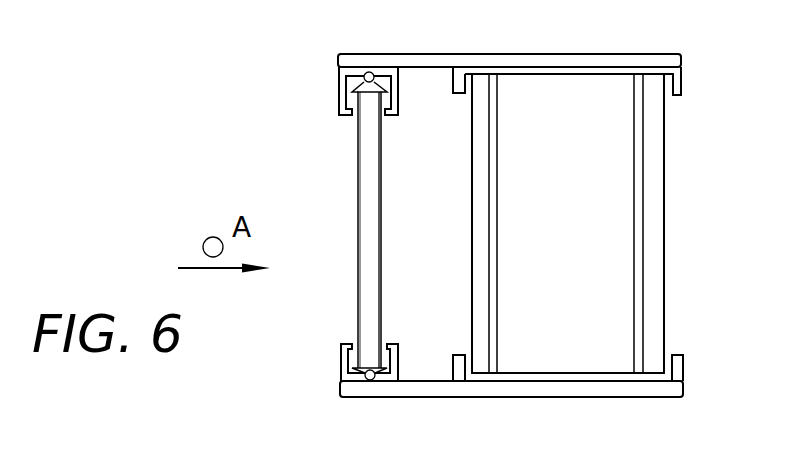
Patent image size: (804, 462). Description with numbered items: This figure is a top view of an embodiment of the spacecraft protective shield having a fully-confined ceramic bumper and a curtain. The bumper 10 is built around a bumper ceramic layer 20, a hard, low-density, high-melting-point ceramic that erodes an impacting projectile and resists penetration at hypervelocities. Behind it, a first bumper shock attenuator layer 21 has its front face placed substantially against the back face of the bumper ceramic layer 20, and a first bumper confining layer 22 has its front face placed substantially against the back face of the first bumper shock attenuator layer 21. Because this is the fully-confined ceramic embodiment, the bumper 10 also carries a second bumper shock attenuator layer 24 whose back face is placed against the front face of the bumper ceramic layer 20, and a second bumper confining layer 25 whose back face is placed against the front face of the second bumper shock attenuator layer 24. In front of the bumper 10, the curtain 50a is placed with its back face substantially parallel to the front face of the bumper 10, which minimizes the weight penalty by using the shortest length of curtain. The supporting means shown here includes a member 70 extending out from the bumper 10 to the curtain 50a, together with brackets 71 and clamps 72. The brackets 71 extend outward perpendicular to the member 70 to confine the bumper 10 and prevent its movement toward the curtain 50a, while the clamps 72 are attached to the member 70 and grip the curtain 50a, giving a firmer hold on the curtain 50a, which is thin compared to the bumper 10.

The bumper 10 is at (663, 385).
The bumper ceramic layer 20 is at (555, 90).
The first bumper shock attenuator layer 21 is at (637, 86).
The first bumper confining layer 22 is at (659, 88).
The second bumper shock attenuator layer 24 is at (496, 84).
The second bumper confining layer 25 is at (488, 86).
The curtain 50a is at (368, 165).
The member 70 is at (448, 393).
The brackets 71 is at (464, 384).
The clamps 72 is at (350, 382).